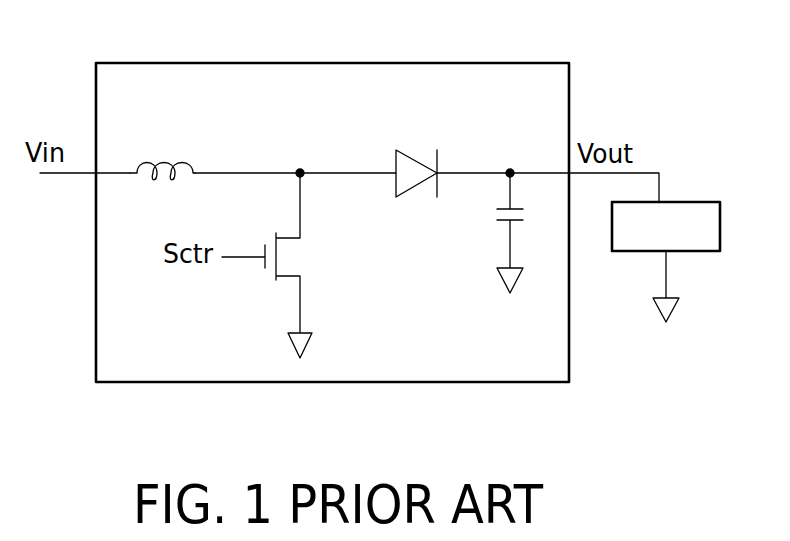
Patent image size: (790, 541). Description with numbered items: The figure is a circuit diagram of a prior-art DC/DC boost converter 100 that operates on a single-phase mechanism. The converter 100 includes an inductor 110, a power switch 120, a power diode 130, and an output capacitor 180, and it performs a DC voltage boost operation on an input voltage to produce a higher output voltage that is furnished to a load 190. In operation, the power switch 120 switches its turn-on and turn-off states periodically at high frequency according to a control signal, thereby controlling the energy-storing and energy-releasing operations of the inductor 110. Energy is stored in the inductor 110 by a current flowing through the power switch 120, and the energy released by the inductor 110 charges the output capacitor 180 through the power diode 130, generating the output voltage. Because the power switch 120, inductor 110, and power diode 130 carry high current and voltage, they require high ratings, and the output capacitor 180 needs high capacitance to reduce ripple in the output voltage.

The DC/DC boost converter 100 is at (332, 63).
The inductor 110 is at (169, 165).
The power switch 120 is at (290, 259).
The power diode 130 is at (413, 155).
The output capacitor 180 is at (495, 213).
The load 190 is at (693, 202).